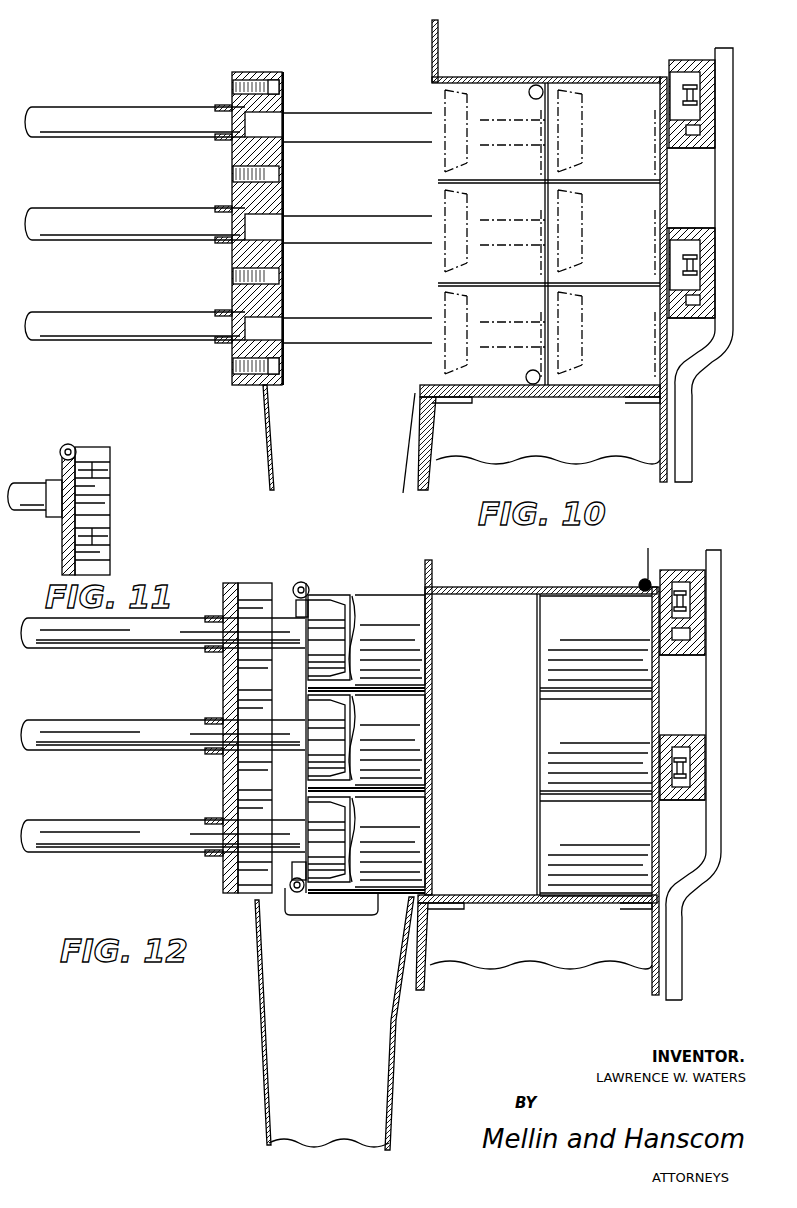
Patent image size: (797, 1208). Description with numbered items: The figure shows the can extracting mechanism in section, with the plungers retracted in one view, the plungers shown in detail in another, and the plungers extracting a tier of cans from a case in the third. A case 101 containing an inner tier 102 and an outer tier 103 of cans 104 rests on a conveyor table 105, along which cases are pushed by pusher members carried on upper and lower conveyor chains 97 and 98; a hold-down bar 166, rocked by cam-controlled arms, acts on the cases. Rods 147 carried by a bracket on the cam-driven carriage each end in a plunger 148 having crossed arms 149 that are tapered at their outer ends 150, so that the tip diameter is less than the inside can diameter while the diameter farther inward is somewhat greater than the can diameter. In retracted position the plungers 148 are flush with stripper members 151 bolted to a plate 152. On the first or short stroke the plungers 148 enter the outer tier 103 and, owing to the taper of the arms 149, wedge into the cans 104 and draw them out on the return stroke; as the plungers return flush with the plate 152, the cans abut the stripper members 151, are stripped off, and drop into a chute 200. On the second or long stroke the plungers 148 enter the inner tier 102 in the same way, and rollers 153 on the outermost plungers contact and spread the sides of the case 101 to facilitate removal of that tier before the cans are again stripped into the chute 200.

In FIG. 10, the upper conveyor chain 97 is at (697, 96).
In FIG. 12, the upper conveyor chain 97 is at (682, 612).
In FIG. 10, the lower conveyor chain 98 is at (708, 234).
In FIG. 12, the lower conveyor chain 98 is at (682, 767).
In FIG. 12, the case 101 is at (507, 592).
In FIG. 10, the inner tier 102 is at (626, 92).
In FIG. 12, the inner tier 102 is at (607, 592).
In FIG. 10, the outer tier 103 is at (504, 92).
In FIG. 12, the can 104 is at (608, 741).
In FIG. 10, the conveyor table 105 is at (570, 400).
In FIG. 10, the rod 147 is at (128, 311).
In FIG. 12, the rod 147 is at (138, 722).
In FIG. 11, the plunger 148 is at (108, 518).
In FIG. 12, the plunger 148 is at (318, 600).
In FIG. 12, the crossed arm 149 is at (308, 683).
In FIG. 12, the tapered outer end 150 is at (346, 606).
In FIG. 10, the stripper member 151 is at (282, 306).
In FIG. 10, the plate 152 is at (232, 264).
In FIG. 12, the plate 152 is at (223, 793).
In FIG. 10, the roller 153 is at (530, 86).
In FIG. 12, the roller 153 is at (300, 582).
In FIG. 12, the hold-down bar 166 is at (635, 559).
In FIG. 12, the chute 200 is at (268, 1028).